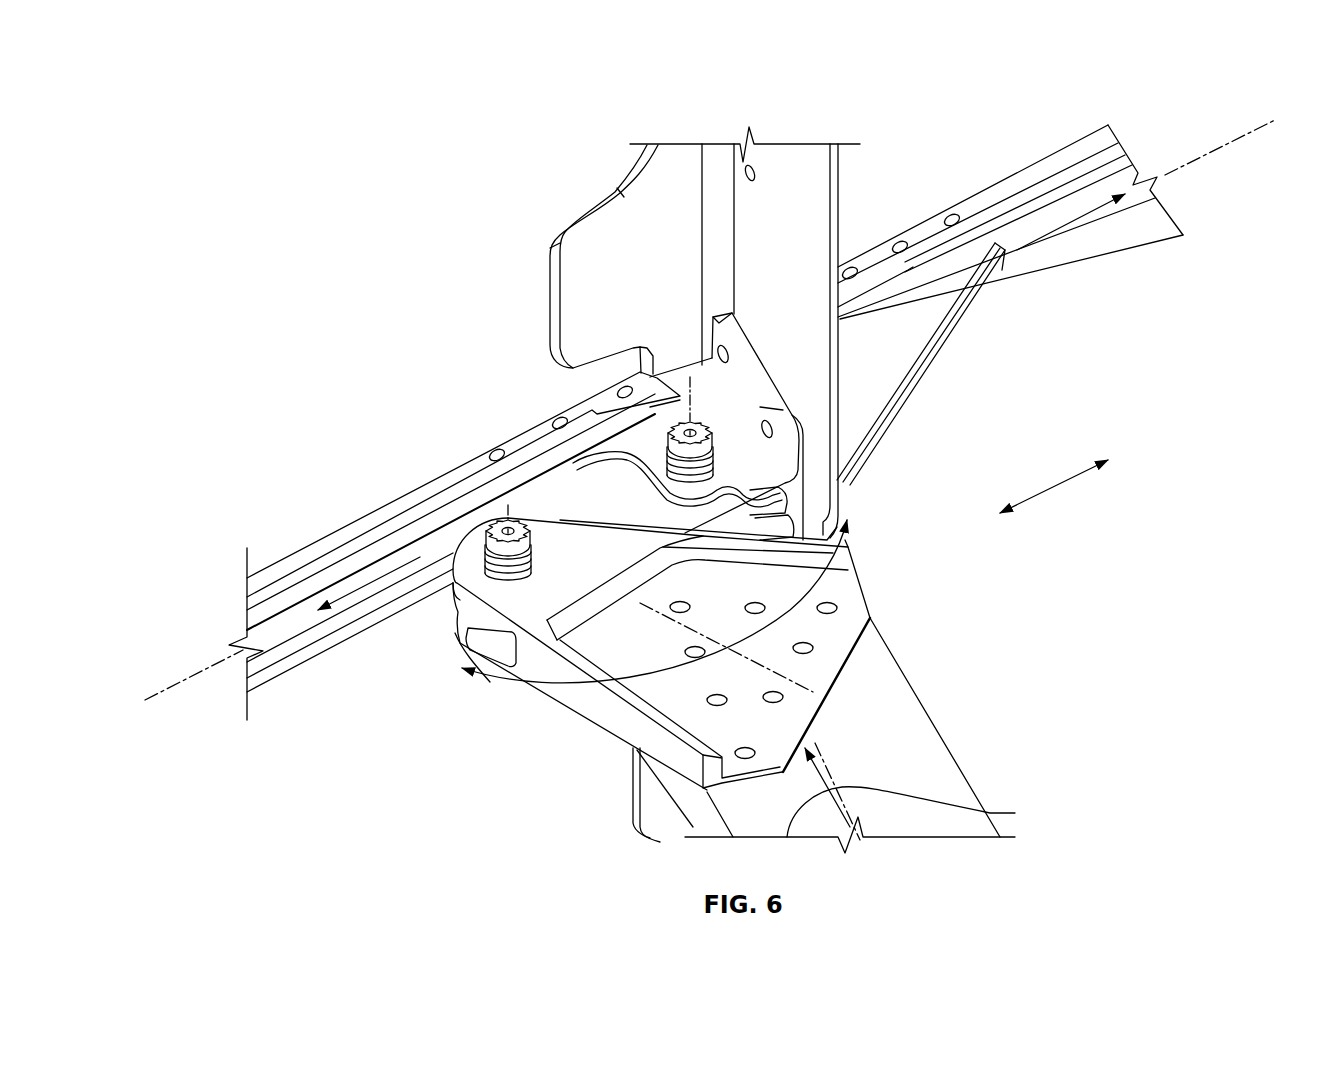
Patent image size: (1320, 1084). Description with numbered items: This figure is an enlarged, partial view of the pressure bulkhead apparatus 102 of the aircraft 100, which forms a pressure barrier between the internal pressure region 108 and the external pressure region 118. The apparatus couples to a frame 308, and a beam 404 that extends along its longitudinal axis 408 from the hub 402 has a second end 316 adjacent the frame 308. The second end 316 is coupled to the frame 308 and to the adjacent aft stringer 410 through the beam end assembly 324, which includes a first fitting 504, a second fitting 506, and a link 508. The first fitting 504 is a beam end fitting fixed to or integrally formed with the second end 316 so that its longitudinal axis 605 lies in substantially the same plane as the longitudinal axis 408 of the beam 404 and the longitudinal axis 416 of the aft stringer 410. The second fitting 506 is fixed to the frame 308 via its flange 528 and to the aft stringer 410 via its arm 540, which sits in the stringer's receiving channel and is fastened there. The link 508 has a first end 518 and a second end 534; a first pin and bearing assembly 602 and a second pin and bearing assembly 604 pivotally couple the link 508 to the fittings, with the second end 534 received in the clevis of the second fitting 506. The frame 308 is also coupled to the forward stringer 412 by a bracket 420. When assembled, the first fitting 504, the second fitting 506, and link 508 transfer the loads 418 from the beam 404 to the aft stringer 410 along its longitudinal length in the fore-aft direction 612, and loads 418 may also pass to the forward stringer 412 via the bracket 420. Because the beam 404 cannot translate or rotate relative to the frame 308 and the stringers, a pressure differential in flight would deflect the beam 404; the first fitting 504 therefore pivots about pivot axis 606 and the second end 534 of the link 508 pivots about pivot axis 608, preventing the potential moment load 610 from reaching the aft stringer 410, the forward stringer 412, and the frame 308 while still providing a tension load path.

The aircraft 100 is at (258, 105).
The pressure bulkhead apparatus 102 is at (278, 172).
The external pressure region 118 is at (286, 305).
The internal pressure region 108 is at (974, 131).
The frame 308 is at (842, 185).
The beam end assembly 324 is at (515, 362).
The pivot axis 608 is at (680, 367).
The aft stringer 410 is at (418, 488).
The forward stringer 412 is at (1078, 150).
The link 508 is at (530, 450).
The arm 540 is at (494, 471).
The longitudinal axis of the aft stringer 416 is at (180, 689).
The loads 418 is at (353, 592).
The bracket 420 is at (913, 353).
The second fitting 506 is at (795, 457).
The flange 528 is at (750, 362).
The second pin and bearing assembly 604 is at (633, 453).
The first pin and bearing assembly 602 is at (528, 545).
The pivot axis 606 is at (530, 526).
The first end of the link 518 is at (455, 623).
The longitudinal axis of the first fitting 605 is at (812, 690).
The first fitting 504 is at (858, 608).
The second end of the link 534 is at (795, 500).
The potential moment load 610 is at (488, 680).
The second end of the beam 316 is at (898, 653).
The hub 402 is at (962, 762).
The longitudinal axis of the beam 408 is at (922, 812).
The beam 404 is at (950, 830).
The fore-aft direction 612 is at (1052, 490).